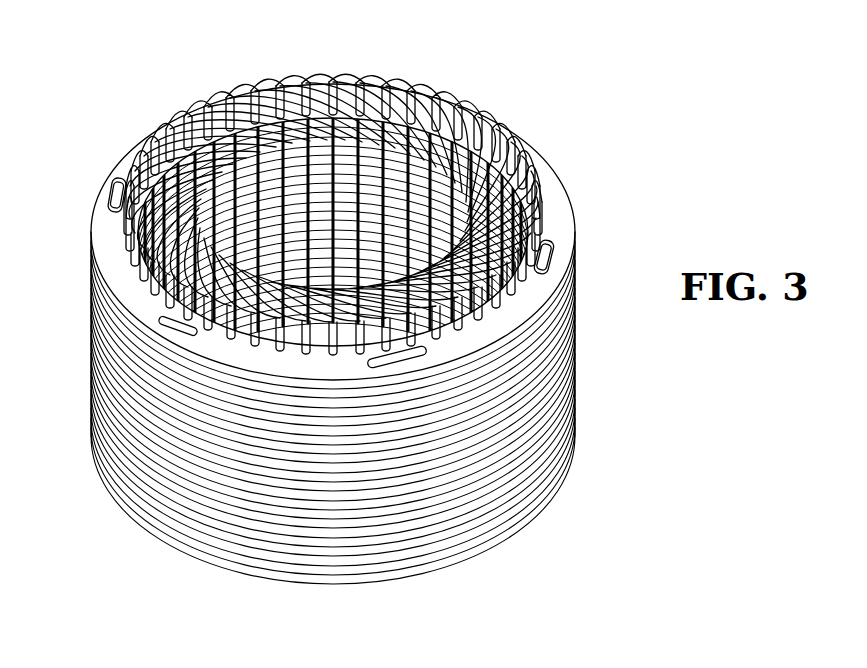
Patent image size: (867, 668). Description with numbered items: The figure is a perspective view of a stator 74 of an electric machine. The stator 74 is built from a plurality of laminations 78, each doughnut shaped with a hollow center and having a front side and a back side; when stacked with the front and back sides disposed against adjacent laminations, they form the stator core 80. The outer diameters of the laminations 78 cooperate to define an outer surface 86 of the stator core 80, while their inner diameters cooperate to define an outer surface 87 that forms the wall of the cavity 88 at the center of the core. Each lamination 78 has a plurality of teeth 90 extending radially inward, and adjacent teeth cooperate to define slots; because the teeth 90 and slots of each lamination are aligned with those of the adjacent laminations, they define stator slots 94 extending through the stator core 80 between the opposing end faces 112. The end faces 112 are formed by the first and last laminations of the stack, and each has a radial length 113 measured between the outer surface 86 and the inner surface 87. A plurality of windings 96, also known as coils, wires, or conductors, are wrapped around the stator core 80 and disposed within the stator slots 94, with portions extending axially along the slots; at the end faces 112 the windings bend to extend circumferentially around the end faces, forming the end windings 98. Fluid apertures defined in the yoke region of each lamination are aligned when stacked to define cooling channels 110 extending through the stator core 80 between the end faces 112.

The stator 74 is at (523, 61).
The laminations 78 is at (551, 200).
The stator core 80 is at (576, 333).
The outer surface 86 is at (82, 340).
The outer surface (inner surface) 87 is at (350, 125).
The cavity 88 is at (428, 100).
The teeth 90 is at (262, 75).
The stator slots 94 is at (457, 322).
The windings 96 is at (252, 336).
The end windings 98 is at (533, 147).
The cooling channels 110 is at (556, 233).
The end faces 112 is at (138, 150).
The radial length 113 is at (345, 331).